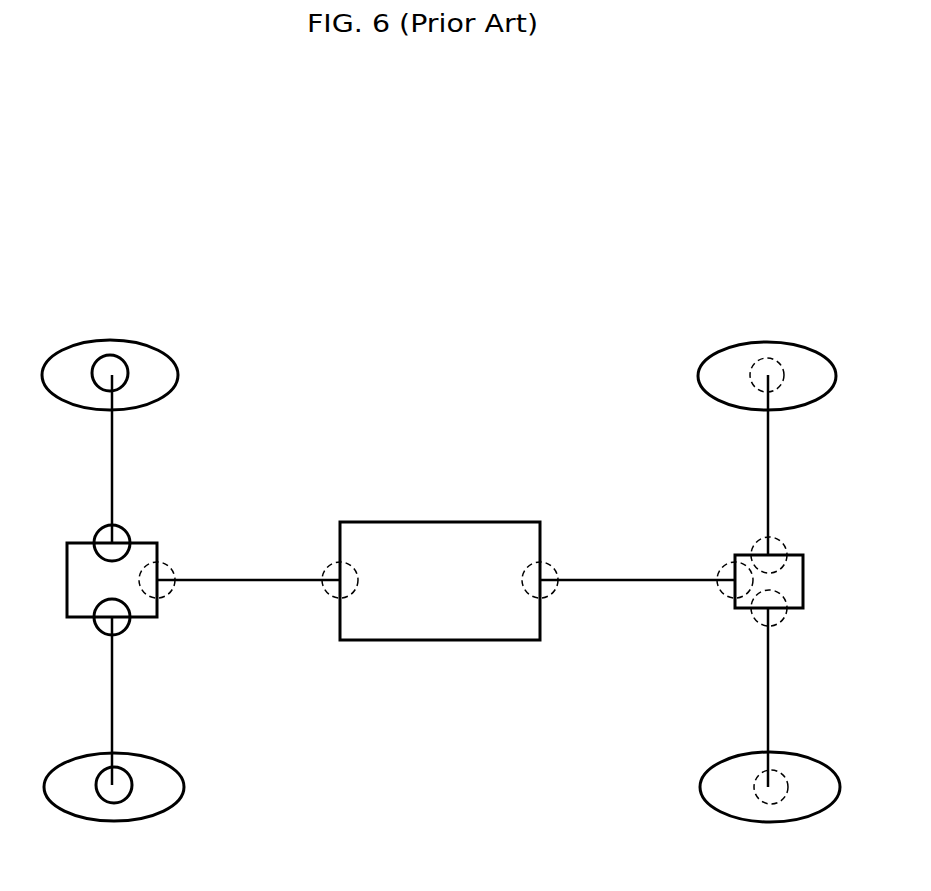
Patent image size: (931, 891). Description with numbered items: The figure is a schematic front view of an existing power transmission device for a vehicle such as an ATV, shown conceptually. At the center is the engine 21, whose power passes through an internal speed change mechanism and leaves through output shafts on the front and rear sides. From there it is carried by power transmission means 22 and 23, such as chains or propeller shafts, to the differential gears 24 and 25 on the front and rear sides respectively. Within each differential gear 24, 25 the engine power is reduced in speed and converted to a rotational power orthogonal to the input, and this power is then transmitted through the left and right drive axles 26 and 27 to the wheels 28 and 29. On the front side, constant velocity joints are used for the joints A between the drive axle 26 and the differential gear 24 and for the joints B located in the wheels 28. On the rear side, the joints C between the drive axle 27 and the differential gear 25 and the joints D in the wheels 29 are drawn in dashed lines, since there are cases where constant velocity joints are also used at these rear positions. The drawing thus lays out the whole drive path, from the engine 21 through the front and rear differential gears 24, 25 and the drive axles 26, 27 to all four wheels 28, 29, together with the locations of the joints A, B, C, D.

The engine 21 is at (446, 520).
The power transmission means 22 is at (248, 578).
The power transmission means 23 is at (637, 578).
The differential gear 24 is at (66, 578).
The differential gear 25 is at (803, 580).
The drive axle 26 is at (110, 462).
The drive axle 27 is at (766, 456).
The wheel 28 is at (65, 345).
The wheel 29 is at (812, 348).
The joint A is at (125, 530).
The joint B is at (126, 385).
The joint C is at (757, 542).
The joint D is at (751, 375).